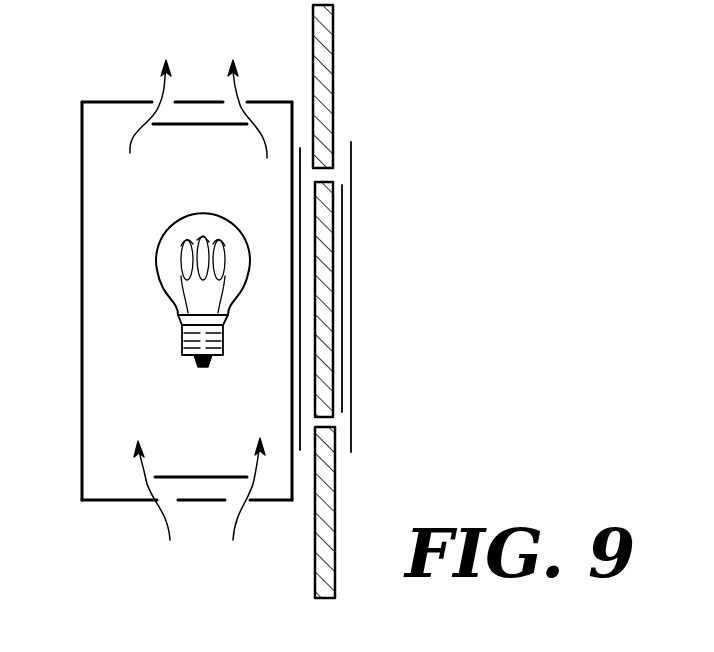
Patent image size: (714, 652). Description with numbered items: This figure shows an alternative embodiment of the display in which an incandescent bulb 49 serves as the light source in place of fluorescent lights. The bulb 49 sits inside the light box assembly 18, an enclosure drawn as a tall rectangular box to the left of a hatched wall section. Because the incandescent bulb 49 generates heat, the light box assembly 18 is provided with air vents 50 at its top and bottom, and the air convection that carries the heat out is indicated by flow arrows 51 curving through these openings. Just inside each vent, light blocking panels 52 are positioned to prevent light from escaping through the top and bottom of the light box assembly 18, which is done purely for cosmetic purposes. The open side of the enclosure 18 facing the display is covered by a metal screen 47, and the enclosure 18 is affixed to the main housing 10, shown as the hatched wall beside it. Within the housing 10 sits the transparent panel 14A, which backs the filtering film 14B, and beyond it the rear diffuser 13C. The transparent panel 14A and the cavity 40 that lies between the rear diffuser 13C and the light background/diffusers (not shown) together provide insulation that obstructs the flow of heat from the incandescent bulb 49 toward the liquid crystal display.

The main housing 10 is at (333, 98).
The rear diffuser 13C is at (352, 163).
The transparent panel 14A is at (333, 350).
The filtering film 14B is at (343, 277).
The light box assembly 18 is at (82, 228).
The cavity 40 is at (375, 394).
The metal screen 47 is at (300, 388).
The incandescent bulb 49 is at (155, 257).
The air vents 50 is at (160, 103).
The flow arrows 51 is at (130, 153).
The light blocking panels 52 is at (212, 124).